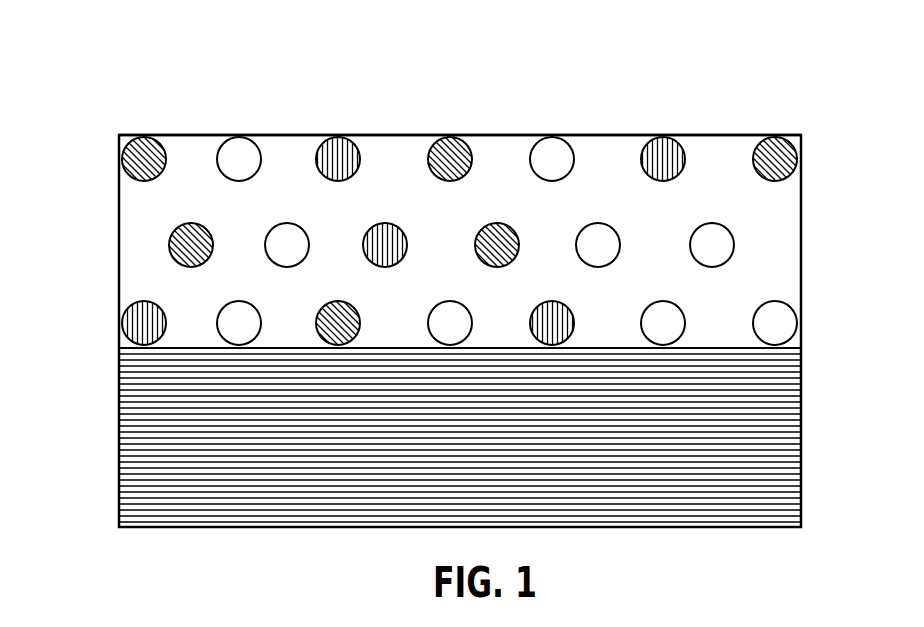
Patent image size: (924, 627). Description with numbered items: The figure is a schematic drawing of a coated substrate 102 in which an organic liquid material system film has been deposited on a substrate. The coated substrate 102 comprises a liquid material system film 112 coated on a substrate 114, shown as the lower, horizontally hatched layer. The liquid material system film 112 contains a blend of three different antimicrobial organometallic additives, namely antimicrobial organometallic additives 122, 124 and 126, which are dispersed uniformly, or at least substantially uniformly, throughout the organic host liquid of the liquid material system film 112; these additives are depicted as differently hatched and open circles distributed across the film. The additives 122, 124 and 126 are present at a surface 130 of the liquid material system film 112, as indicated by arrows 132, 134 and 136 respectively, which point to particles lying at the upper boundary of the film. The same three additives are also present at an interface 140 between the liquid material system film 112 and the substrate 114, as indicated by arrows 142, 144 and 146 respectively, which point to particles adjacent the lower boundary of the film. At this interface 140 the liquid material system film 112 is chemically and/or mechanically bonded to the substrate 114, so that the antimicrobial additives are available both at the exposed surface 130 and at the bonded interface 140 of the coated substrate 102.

The coated substrate 102 is at (482, 57).
The liquid material system film 112 is at (772, 235).
The substrate 114 is at (760, 418).
The antimicrobial organometallic additive 122 is at (290, 232).
The antimicrobial organometallic additive 124 is at (385, 235).
The antimicrobial organometallic additive 126 is at (492, 235).
The surface 130 is at (600, 135).
The arrow 132 is at (244, 145).
The arrow 134 is at (666, 145).
The arrow 136 is at (122, 156).
The interface 140 is at (715, 345).
The arrow 142 is at (230, 328).
The arrow 144 is at (552, 308).
The arrow 146 is at (338, 308).